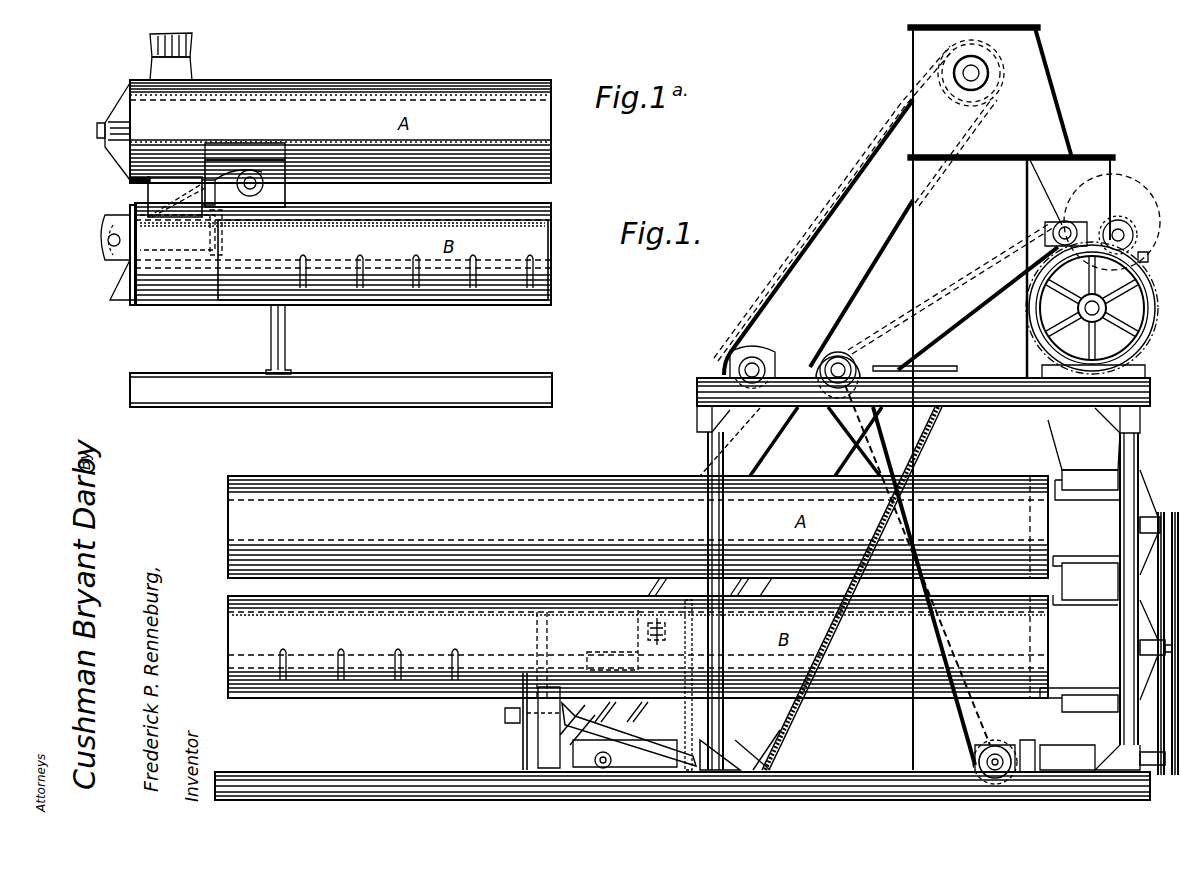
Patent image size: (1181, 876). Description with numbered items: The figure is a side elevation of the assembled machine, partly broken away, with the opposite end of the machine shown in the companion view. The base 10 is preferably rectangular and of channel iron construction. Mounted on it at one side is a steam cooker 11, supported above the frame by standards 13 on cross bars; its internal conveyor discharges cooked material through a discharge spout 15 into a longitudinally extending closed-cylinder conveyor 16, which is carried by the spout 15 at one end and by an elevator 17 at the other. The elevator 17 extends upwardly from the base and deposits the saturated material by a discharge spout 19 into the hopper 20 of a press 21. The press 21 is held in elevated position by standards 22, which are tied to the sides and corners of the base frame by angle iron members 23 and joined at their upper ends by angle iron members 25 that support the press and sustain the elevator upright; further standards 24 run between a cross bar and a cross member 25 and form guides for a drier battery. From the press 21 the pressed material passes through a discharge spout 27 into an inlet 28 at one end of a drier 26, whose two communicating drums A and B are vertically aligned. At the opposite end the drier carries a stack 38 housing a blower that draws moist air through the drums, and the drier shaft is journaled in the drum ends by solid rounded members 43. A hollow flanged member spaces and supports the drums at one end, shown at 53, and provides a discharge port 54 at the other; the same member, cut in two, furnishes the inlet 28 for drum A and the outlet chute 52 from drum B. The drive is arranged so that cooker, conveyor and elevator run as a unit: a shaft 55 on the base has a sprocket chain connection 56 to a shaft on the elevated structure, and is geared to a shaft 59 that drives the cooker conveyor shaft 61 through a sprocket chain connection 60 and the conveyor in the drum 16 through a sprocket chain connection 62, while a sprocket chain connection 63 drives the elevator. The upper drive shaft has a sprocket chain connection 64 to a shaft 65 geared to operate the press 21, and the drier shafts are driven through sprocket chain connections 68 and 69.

In FIG. 1A, the base 10 is at (400, 375).
In FIG. 1, the base 10 is at (415, 772).
In FIG. 1A, the steam cooker 11 is at (548, 223).
In FIG. 1, the steam cooker 11 is at (248, 695).
In FIG. 1A, the standards 13 is at (284, 335).
In FIG. 1, the discharge spout 15 is at (640, 668).
In FIG. 1, the conveyor 16 is at (848, 739).
In FIG. 1, the elevator 17 is at (1011, 397).
In FIG. 1, the discharge spout 19 is at (1060, 133).
In FIG. 1, the hopper 20 is at (1100, 190).
In FIG. 1, the press 21 is at (1140, 260).
In FIG. 1, the standards 22 is at (706, 447).
In FIG. 1, the angle iron members 23 is at (715, 772).
In FIG. 1A, the standards 24 is at (340, 143).
In FIG. 1, the angle iron members 25 is at (988, 398).
In FIG. 1, the drier 26 is at (638, 527).
In FIG. 1, the discharge spout 27 is at (1084, 445).
In FIG. 1, the inlet 28 is at (1085, 480).
In FIG. 1A, the stack 38 is at (178, 65).
In FIG. 1A, the solid rounded members 43 is at (101, 123).
In FIG. 1, the outlet chute 52 is at (1088, 705).
In FIG. 1, the spacing and supporting member 53 is at (1086, 580).
In FIG. 1A, the discharge port 54 is at (150, 190).
In FIG. 1, the shaft 55 is at (612, 770).
In FIG. 1, the sprocket chain connection 56 is at (735, 442).
In FIG. 1, the shaft 59 is at (660, 772).
In FIG. 1, the sprocket chain connection 60 is at (728, 752).
In FIG. 1A, the shaft 61 is at (181, 197).
In FIG. 1, the sprocket chain connection 62 is at (512, 732).
In FIG. 1, the sprocket chain connection 63 is at (822, 222).
In FIG. 1, the sprocket chain connection 64 is at (958, 318).
In FIG. 1, the shaft 65 is at (975, 632).
In FIG. 1, the sprocket chain connection 68 is at (1140, 604).
In FIG. 1, the sprocket chain connection 69 is at (1170, 718).